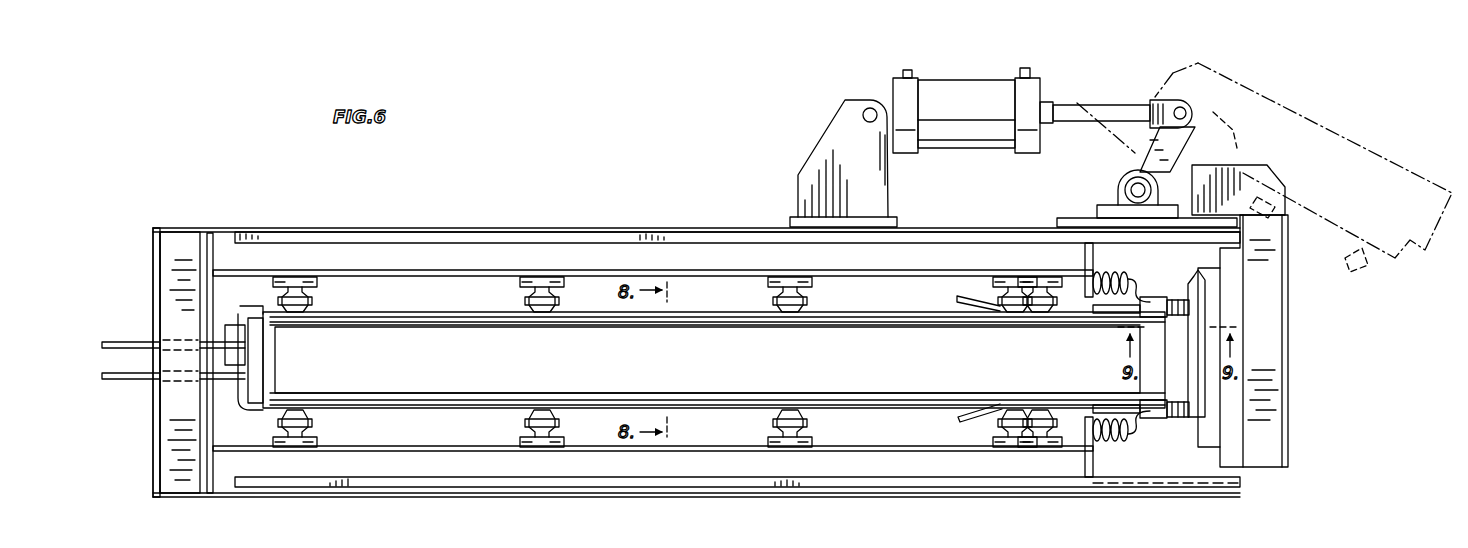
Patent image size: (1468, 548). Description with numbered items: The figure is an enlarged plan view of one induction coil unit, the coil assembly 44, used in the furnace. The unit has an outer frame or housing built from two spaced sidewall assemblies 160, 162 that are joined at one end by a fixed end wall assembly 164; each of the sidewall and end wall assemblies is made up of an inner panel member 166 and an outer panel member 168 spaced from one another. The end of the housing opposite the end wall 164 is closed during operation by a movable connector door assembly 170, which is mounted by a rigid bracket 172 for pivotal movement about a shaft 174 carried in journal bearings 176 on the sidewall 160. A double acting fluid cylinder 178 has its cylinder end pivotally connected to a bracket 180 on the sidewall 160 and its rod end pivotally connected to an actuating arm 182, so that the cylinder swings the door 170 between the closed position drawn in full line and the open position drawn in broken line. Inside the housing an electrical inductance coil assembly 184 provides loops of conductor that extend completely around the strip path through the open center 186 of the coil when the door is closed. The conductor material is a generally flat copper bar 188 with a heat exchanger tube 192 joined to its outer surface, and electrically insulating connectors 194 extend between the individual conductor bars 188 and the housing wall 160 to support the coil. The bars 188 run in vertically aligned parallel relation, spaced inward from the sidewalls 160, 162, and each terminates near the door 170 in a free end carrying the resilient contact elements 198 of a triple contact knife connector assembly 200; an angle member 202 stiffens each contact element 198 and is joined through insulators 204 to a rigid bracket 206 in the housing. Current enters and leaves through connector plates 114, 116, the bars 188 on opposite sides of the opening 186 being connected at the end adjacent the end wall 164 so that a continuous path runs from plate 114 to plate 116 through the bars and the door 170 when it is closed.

The coil assembly 44 is at (646, 226).
The connector plate 114 is at (136, 342).
The connector plate 116 is at (122, 380).
The sidewall assembly 160 is at (389, 225).
The sidewall assembly 162 is at (690, 498).
The fixed end wall assembly 164 is at (149, 272).
The inner panel member 166 is at (480, 270).
The outer panel member 168 is at (423, 232).
The movable connector door assembly 170 is at (1292, 345).
The rigid bracket 172 is at (1224, 192).
The shaft 174 is at (1126, 182).
The journal bearings 176 is at (1110, 206).
The double acting fluid cylinder 178 is at (958, 95).
The bracket 180 is at (822, 136).
The actuating arm 182 is at (1192, 132).
The electrical inductance coil assembly 184 is at (443, 312).
The open center 186 is at (713, 370).
The copper bar 188 is at (156, 481).
The heat exchanger tube 192 is at (249, 313).
The electrically insulating connectors 194 is at (313, 300).
The resilient contact elements 198 is at (1162, 297).
The triple contact knife connector assembly 200 is at (1180, 296).
The angle member 202 is at (1134, 276).
The insulators 204 is at (1112, 314).
The rigid bracket 206 is at (1093, 256).